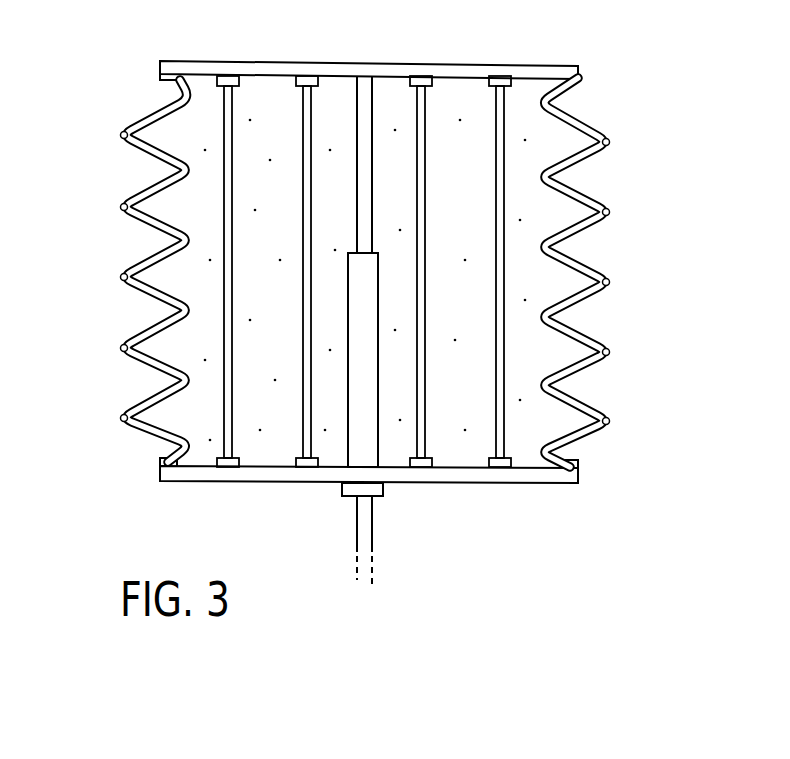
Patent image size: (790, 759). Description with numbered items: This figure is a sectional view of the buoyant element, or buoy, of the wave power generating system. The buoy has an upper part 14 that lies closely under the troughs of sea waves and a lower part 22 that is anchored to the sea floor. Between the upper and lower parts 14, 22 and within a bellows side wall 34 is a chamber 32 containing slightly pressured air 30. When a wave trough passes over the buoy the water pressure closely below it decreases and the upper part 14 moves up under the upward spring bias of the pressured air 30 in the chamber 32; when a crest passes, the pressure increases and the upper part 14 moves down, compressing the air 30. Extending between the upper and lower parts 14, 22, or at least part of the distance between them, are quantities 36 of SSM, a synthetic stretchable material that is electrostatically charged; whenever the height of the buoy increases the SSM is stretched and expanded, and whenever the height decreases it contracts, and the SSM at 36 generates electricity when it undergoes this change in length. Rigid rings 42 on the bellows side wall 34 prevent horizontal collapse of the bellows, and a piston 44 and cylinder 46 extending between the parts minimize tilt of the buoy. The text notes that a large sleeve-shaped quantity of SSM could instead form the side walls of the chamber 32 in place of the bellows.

The upper part 14 is at (178, 62).
The lower part 22 is at (167, 481).
The slightly pressured air 30 is at (474, 196).
The chamber 32 is at (165, 209).
The bellows side wall 34 is at (120, 271).
The quantities of SSM (synthetic stretchable material) 36 is at (137, 263).
The rigid rings 42 is at (576, 130).
The piston 44 is at (355, 113).
The cylinder 46 is at (343, 453).